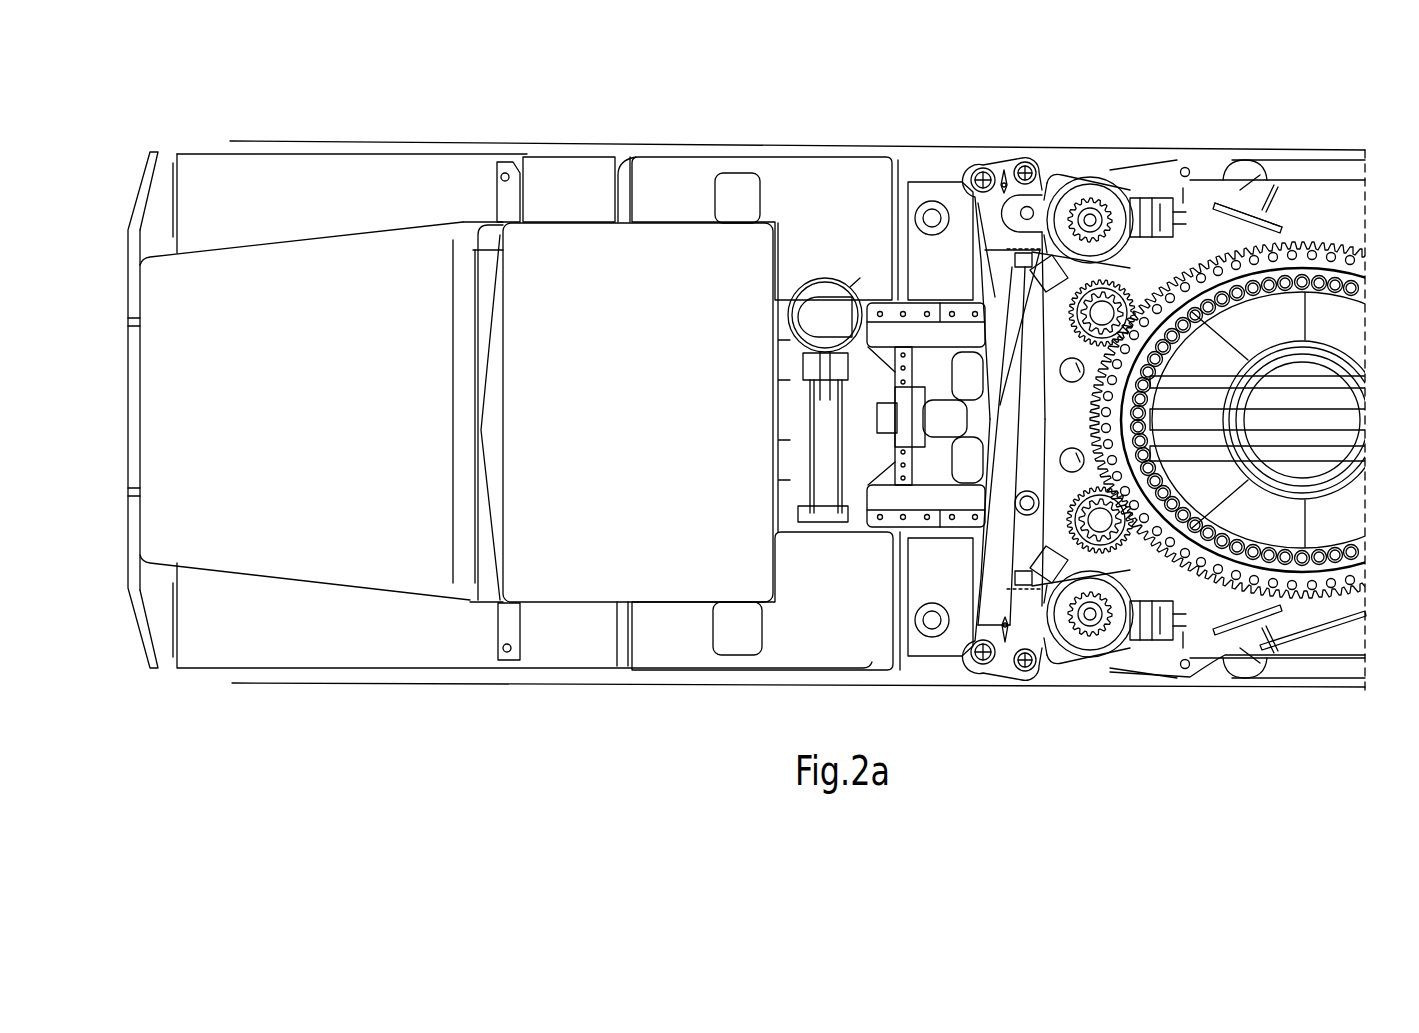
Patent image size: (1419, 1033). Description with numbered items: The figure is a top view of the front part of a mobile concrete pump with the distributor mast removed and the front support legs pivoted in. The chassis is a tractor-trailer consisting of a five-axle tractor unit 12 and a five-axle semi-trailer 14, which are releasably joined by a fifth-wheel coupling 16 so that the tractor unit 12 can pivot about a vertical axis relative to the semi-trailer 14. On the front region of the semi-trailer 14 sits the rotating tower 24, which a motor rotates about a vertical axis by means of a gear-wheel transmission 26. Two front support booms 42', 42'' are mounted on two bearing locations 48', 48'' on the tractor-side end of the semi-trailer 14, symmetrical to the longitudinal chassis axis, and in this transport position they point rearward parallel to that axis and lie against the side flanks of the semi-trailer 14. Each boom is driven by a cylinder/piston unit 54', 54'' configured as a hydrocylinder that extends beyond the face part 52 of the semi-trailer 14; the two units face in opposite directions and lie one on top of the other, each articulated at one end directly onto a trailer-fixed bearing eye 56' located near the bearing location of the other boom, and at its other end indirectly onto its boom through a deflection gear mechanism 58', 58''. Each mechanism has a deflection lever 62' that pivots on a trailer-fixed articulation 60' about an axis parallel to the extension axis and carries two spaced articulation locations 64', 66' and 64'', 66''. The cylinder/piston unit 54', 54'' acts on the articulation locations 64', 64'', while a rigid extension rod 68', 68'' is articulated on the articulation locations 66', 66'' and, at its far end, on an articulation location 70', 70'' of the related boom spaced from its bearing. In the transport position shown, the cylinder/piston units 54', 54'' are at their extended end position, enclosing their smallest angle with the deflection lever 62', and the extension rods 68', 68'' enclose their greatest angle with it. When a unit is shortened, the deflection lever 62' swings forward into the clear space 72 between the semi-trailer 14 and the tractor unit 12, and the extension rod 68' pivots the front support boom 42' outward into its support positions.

The tractor unit 12 is at (813, 213).
The semi-trailer 14 is at (1088, 163).
The fifth-wheel coupling 16 is at (1308, 368).
The rotating tower 24 is at (1187, 250).
The gear-wheel transmission 26 is at (1146, 277).
The front support boom 42' is at (1291, 685).
The front support boom 42'' is at (1286, 153).
The bearing location 48' is at (1090, 658).
The bearing location 48'' is at (1114, 177).
The face part 52 is at (1012, 442).
The cylinder/piston unit 54' is at (954, 198).
The cylinder/piston unit 54'' is at (991, 158).
The bearing eye 56' is at (1048, 150).
The deflection gear mechanism 58' is at (1005, 690).
The deflection gear mechanism 58'' is at (1025, 111).
The articulation 60' is at (1070, 415).
The deflection lever 62' is at (1049, 605).
The articulation location 64' is at (972, 688).
The articulation location 64'' is at (989, 141).
The articulation location 66' is at (1035, 715).
The articulation location 66'' is at (1034, 137).
The extension rod 68' is at (1104, 677).
The extension rod 68'' is at (1107, 147).
The articulation location 70' is at (1206, 688).
The articulation location 70'' is at (1222, 124).
The clear space 72 is at (915, 548).